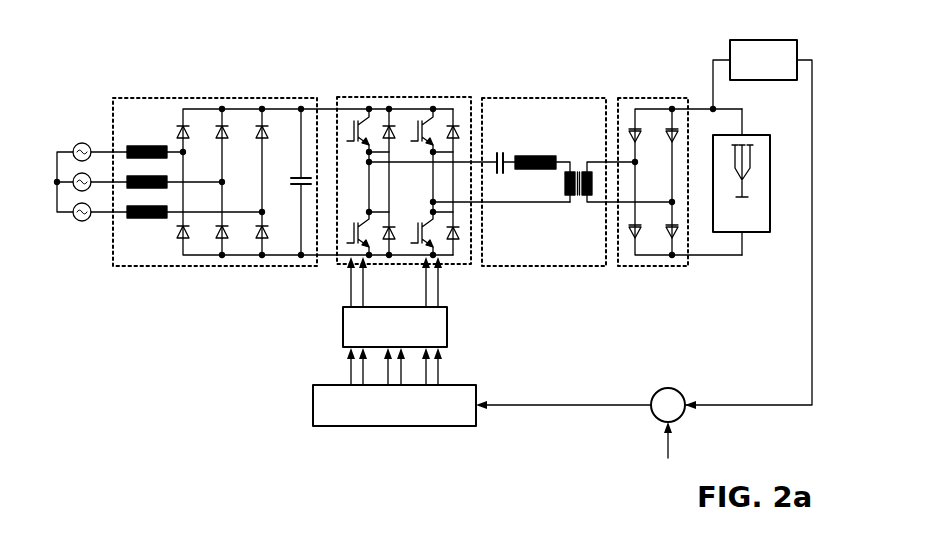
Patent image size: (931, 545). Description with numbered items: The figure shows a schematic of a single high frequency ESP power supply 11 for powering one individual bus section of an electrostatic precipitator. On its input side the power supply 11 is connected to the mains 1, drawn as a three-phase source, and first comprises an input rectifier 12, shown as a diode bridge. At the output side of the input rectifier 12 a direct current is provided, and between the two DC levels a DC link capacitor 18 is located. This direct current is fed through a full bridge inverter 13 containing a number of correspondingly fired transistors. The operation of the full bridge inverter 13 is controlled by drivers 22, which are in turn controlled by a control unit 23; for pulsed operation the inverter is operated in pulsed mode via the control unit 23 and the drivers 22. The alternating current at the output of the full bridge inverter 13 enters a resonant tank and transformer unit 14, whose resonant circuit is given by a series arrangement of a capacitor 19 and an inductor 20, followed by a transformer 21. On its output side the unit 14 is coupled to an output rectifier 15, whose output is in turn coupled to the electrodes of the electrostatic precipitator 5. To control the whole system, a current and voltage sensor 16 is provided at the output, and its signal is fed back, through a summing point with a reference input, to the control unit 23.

The mains 1 is at (83, 140).
The input rectifier 12 is at (215, 163).
The power supply 11 is at (207, 270).
The DC link capacitor 18 is at (295, 186).
The full bridge inverter 13 is at (453, 162).
The resonant tank and transformer unit 14 is at (544, 163).
The capacitor 19 is at (500, 177).
The inductor 20 is at (534, 173).
The transformer 21 is at (579, 200).
The output rectifier 15 is at (680, 163).
The current and voltage sensor 16 is at (778, 74).
The electrostatic precipitator 5 is at (762, 187).
The drivers 22 is at (380, 340).
The control unit 23 is at (380, 417).